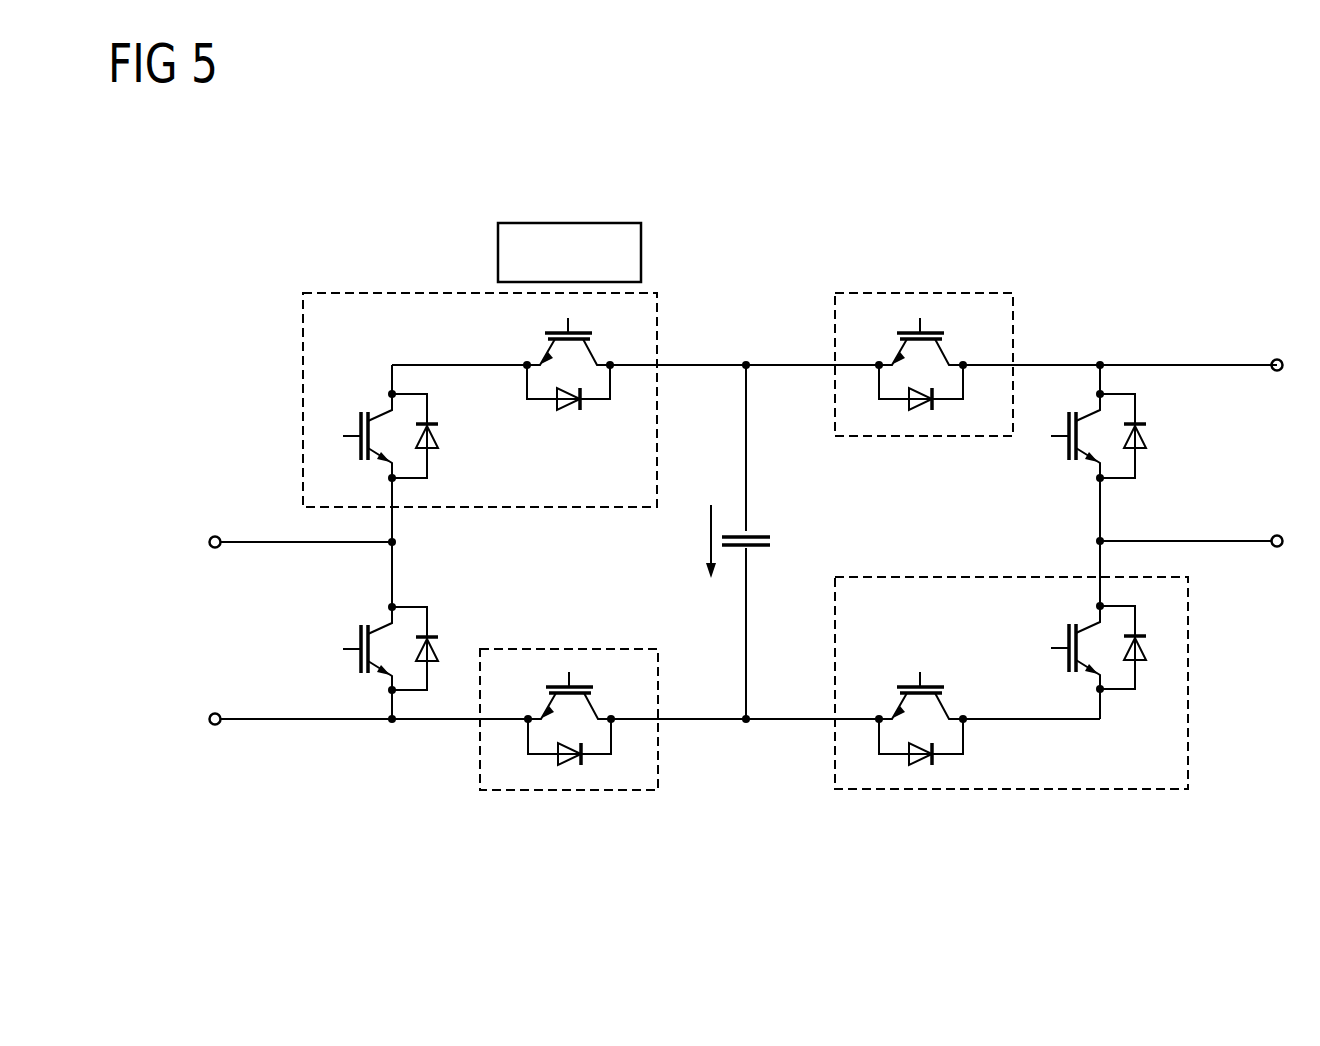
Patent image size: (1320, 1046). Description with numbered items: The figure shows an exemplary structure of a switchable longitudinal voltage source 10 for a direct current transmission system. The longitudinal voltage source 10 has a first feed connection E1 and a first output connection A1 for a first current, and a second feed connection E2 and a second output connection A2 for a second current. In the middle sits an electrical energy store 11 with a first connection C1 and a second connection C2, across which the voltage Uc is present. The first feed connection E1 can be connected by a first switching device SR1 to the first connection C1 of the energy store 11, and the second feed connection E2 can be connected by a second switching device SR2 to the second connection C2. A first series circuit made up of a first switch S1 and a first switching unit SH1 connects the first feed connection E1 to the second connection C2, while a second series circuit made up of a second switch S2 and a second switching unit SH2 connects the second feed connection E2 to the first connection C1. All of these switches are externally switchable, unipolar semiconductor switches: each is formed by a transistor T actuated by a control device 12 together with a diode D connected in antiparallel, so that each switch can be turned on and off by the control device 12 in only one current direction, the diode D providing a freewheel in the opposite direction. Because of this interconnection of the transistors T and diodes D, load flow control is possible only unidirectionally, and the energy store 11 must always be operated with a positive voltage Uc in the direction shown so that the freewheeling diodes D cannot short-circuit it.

The longitudinal voltage source 10 is at (1152, 184).
The electrical energy store 11 is at (770, 541).
The control device 12 is at (641, 251).
The first switching device SR1 is at (386, 293).
The second switching device SR2 is at (1000, 790).
The first switching unit SH1 is at (567, 790).
The second switching unit SH2 is at (918, 293).
The transistor T is at (350, 416).
The diode D is at (440, 437).
The first switch S1 is at (336, 630).
The second switch S2 is at (1165, 462).
The first connection of the energy store C1 is at (746, 363).
The second connection of the energy store C2 is at (746, 723).
The first feed connection E1 is at (298, 520).
The second feed connection E2 is at (1194, 564).
The first output connection A1 is at (298, 740).
The second output connection A2 is at (1277, 344).
The voltage of the energy store Uc is at (694, 541).